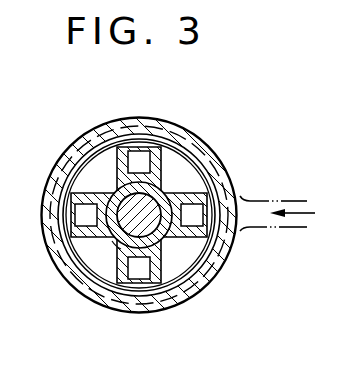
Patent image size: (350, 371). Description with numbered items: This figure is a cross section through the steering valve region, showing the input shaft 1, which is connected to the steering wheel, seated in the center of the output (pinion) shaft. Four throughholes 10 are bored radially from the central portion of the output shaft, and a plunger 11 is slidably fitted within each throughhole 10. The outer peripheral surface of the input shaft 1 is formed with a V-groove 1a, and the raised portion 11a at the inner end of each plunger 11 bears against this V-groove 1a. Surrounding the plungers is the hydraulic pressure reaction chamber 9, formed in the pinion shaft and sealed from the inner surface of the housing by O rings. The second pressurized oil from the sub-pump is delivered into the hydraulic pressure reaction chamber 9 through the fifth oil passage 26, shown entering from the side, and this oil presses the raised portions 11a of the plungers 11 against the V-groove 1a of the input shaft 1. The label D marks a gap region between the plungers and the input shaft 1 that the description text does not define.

The hydraulic pressure reaction chamber 9 is at (76, 149).
The plunger 11 is at (173, 125).
The raised portion 11a is at (128, 128).
The throughhole 10 is at (163, 164).
The V-groove 1a is at (157, 191).
The input shaft 1 is at (165, 236).
The gap D is at (115, 243).
The fifth oil passage 26 is at (264, 204).